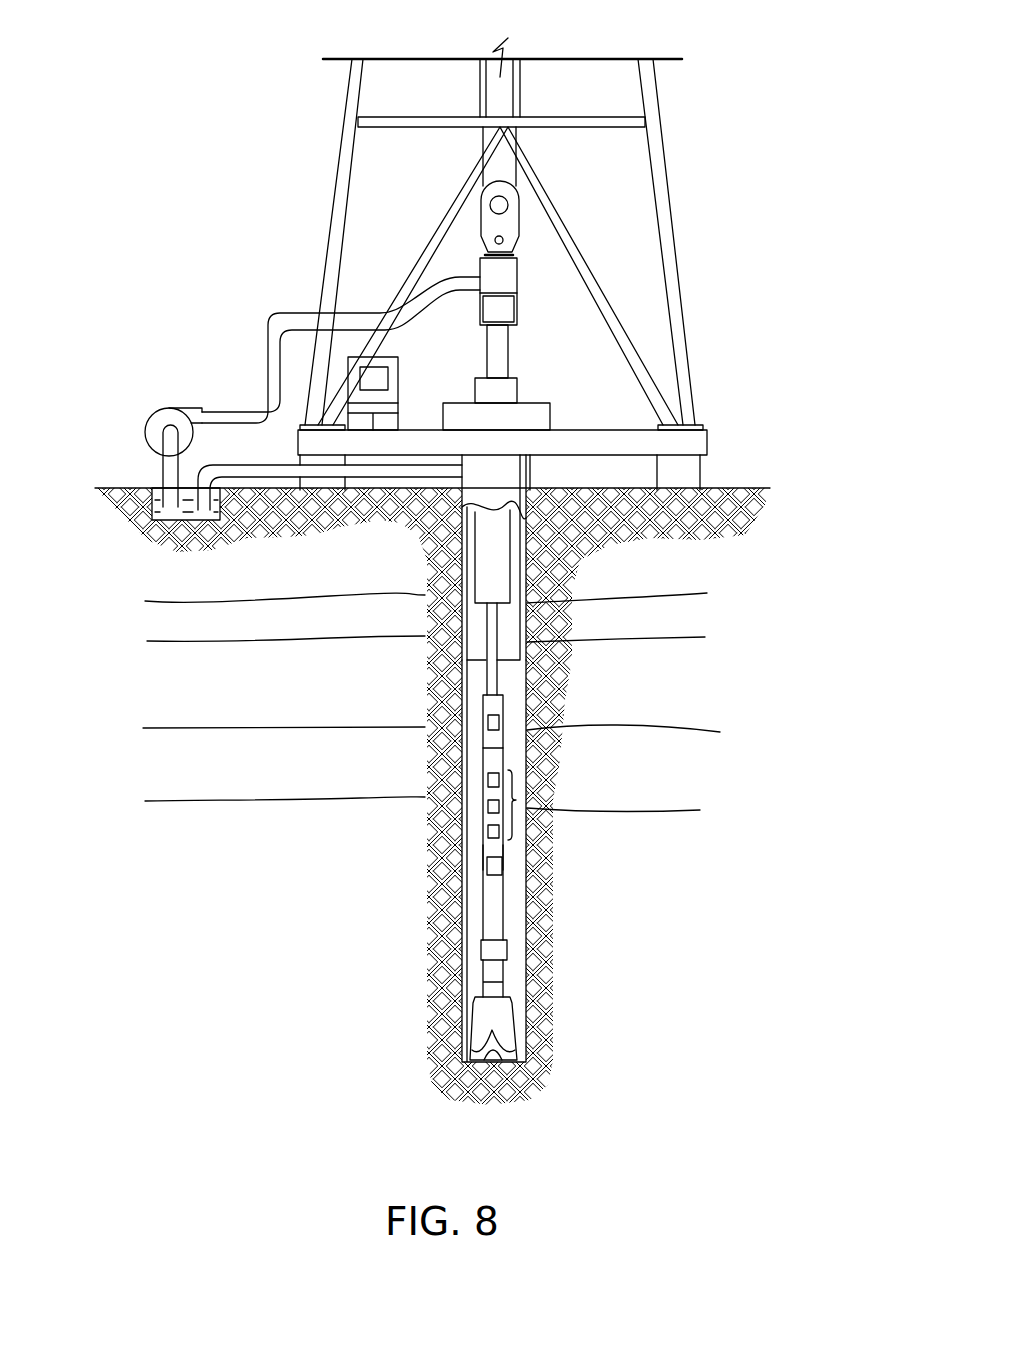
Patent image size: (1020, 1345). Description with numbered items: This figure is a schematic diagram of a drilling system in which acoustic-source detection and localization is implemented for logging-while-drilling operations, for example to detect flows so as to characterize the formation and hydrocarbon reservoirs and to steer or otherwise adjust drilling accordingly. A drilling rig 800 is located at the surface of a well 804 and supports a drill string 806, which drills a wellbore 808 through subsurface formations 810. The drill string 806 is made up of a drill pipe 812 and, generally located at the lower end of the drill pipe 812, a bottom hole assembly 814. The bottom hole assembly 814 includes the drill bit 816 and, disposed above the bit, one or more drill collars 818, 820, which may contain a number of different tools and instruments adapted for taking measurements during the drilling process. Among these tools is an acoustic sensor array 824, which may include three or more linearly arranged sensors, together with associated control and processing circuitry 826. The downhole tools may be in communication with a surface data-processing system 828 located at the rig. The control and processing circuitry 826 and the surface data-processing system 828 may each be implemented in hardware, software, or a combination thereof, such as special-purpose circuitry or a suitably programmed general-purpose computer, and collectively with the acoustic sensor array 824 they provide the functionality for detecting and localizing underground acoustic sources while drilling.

The drilling rig 800 is at (694, 192).
The well 804 is at (538, 488).
The drill string 806 is at (504, 846).
The wellbore 808 is at (518, 937).
The subsurface formations 810 is at (128, 598).
The drill pipe 812 is at (510, 566).
The bottom hole assembly 814 is at (425, 657).
The drill bit 816 is at (500, 1020).
The drill collar 818 is at (494, 638).
The drill collar 820 is at (500, 700).
The acoustic sensor array 824 is at (517, 800).
The control and processing circuitry 826 is at (500, 870).
The surface data-processing system 828 is at (389, 356).